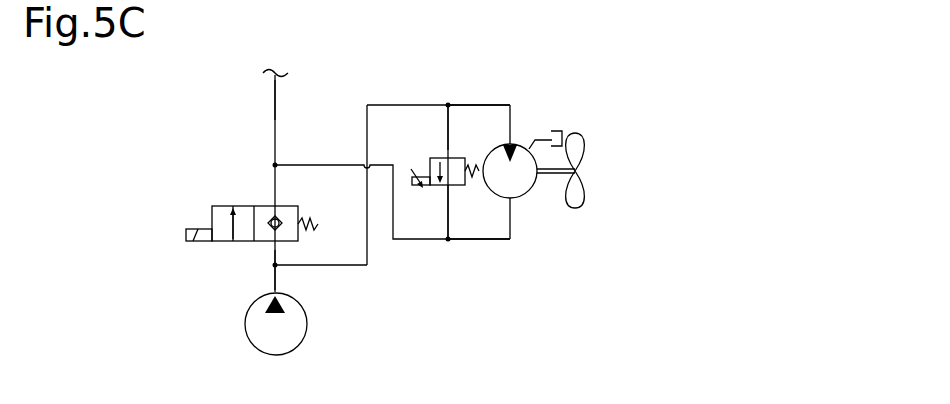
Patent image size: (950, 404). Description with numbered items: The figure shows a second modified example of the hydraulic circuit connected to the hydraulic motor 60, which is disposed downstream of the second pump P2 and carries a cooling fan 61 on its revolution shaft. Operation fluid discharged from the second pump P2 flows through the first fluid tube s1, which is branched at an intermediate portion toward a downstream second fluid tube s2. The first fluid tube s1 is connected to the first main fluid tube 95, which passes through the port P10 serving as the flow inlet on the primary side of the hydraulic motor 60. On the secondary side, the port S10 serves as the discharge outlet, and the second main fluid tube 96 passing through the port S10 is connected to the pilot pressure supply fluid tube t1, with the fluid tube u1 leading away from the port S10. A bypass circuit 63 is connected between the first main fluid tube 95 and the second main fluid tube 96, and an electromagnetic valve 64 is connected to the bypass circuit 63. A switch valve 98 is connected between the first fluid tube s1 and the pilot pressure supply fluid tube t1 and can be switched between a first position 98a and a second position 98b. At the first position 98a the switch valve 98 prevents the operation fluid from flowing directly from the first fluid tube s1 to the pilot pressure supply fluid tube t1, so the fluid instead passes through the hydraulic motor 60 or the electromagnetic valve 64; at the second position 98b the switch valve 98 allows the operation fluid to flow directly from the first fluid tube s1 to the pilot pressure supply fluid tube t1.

The switch valve 98 is at (263, 187).
The first position 98a is at (287, 202).
The second position 98b is at (247, 200).
The first fluid tube s1 is at (273, 280).
The second pump P2 is at (292, 322).
The port P10 is at (448, 105).
The first main fluid tube 95 is at (490, 105).
The hydraulic motor 60 is at (524, 148).
The cooling fan 61 is at (588, 133).
The bypass circuit 63 is at (448, 208).
The electromagnetic valve 64 is at (470, 180).
The port S10 is at (448, 239).
The second main fluid tube 96 is at (485, 239).
The pilot pressure supply fluid tube t1 is at (199, 100).
The fluid tube u1 is at (199, 100).
The second fluid tube s2 is at (275, 97).